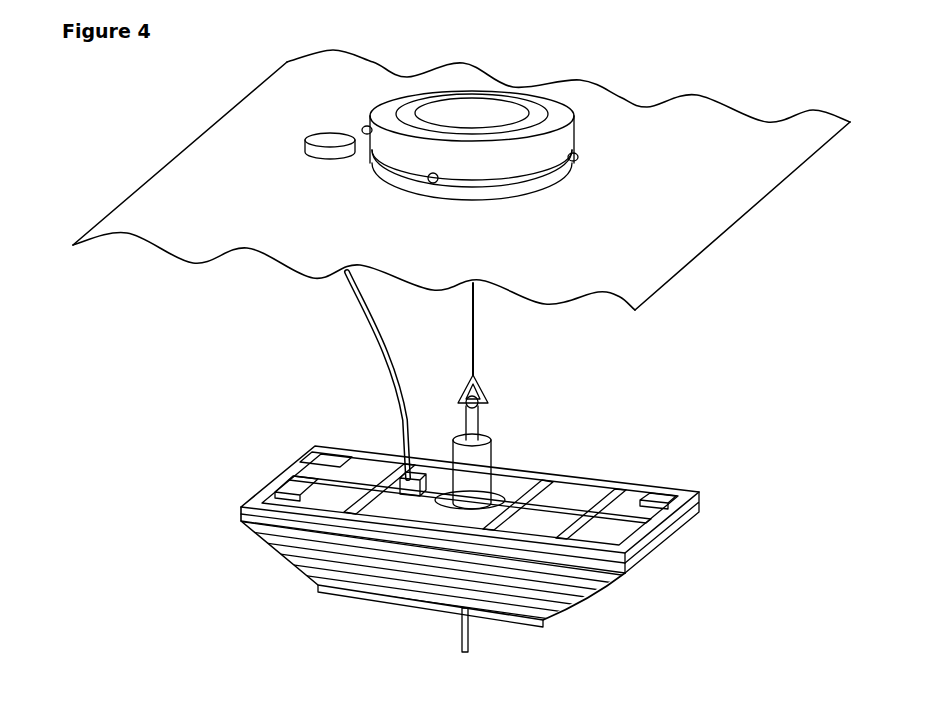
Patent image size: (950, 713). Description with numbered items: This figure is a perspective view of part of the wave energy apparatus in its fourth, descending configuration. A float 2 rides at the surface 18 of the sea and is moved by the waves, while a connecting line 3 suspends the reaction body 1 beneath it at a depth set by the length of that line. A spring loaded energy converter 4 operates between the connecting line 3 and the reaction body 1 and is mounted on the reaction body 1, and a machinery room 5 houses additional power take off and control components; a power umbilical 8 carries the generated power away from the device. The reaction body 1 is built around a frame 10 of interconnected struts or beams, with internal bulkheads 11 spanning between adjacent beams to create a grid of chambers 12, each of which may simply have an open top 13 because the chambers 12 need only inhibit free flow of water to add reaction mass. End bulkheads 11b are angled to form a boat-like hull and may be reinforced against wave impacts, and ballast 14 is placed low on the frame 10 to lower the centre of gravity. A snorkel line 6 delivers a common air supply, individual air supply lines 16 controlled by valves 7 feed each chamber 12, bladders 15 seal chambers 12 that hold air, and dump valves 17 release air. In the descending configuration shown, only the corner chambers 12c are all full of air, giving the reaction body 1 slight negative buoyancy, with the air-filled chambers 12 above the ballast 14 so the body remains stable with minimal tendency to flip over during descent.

The reaction body 1 is at (258, 551).
The float 2 is at (557, 133).
The connecting line 3 is at (478, 336).
The spring loaded energy converter 4 is at (485, 467).
The machinery room 5 is at (524, 508).
The snorkel line 6 is at (366, 318).
The valves 7 is at (330, 445).
The power umbilical 8 is at (473, 637).
The frame 10 is at (330, 464).
The internal bulkheads 11 is at (525, 537).
The end bulkheads 11b is at (682, 543).
The chambers 12 is at (375, 518).
The corner chambers 12c is at (298, 509).
The open top 13 is at (465, 528).
The ballast 14 is at (402, 595).
The bladders 15 is at (682, 492).
The individual air supply lines 16 is at (437, 490).
The dump valves 17 is at (640, 563).
The surface of sea 18 is at (691, 200).